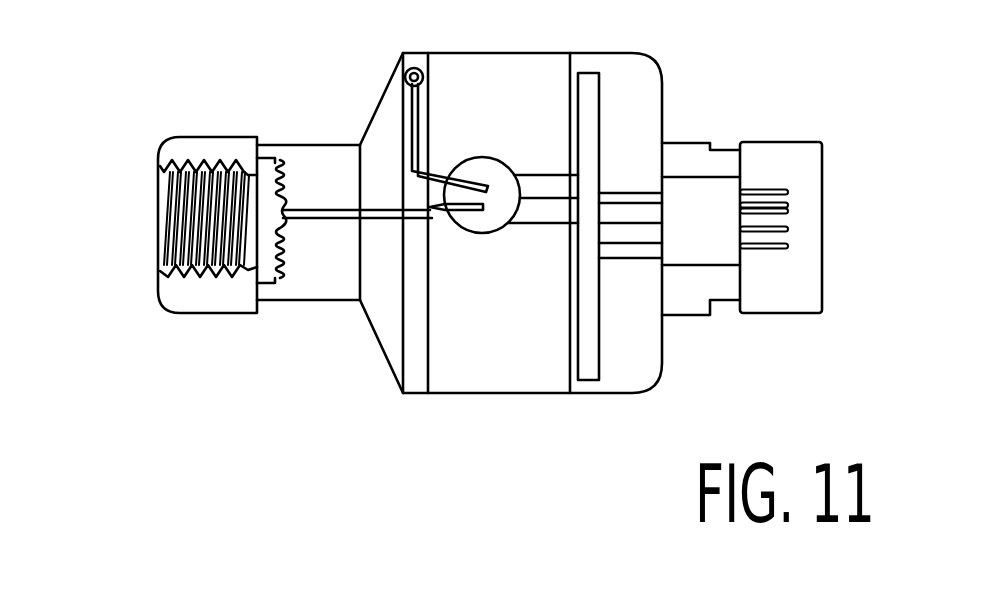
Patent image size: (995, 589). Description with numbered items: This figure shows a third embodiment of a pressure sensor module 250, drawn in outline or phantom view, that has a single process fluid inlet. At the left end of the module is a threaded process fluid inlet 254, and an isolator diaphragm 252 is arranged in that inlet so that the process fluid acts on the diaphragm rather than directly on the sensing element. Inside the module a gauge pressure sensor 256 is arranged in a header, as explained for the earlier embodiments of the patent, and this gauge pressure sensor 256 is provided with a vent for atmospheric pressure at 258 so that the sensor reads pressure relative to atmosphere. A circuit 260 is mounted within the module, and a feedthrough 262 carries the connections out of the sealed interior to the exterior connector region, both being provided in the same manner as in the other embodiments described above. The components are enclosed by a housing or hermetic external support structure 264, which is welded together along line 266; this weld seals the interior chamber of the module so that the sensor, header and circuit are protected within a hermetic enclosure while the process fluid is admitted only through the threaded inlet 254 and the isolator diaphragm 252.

The pressure sensor module 250 is at (666, 43).
The isolator diaphragm 252 is at (292, 219).
The threaded process fluid inlet 254 is at (165, 231).
The gauge pressure sensor 256 is at (478, 158).
The vent for atmospheric pressure 258 is at (407, 70).
The circuit 260 is at (579, 72).
The feedthrough 262 is at (716, 186).
The housing or hermetic external support structure 264 is at (663, 362).
The weld line 266 is at (572, 333).